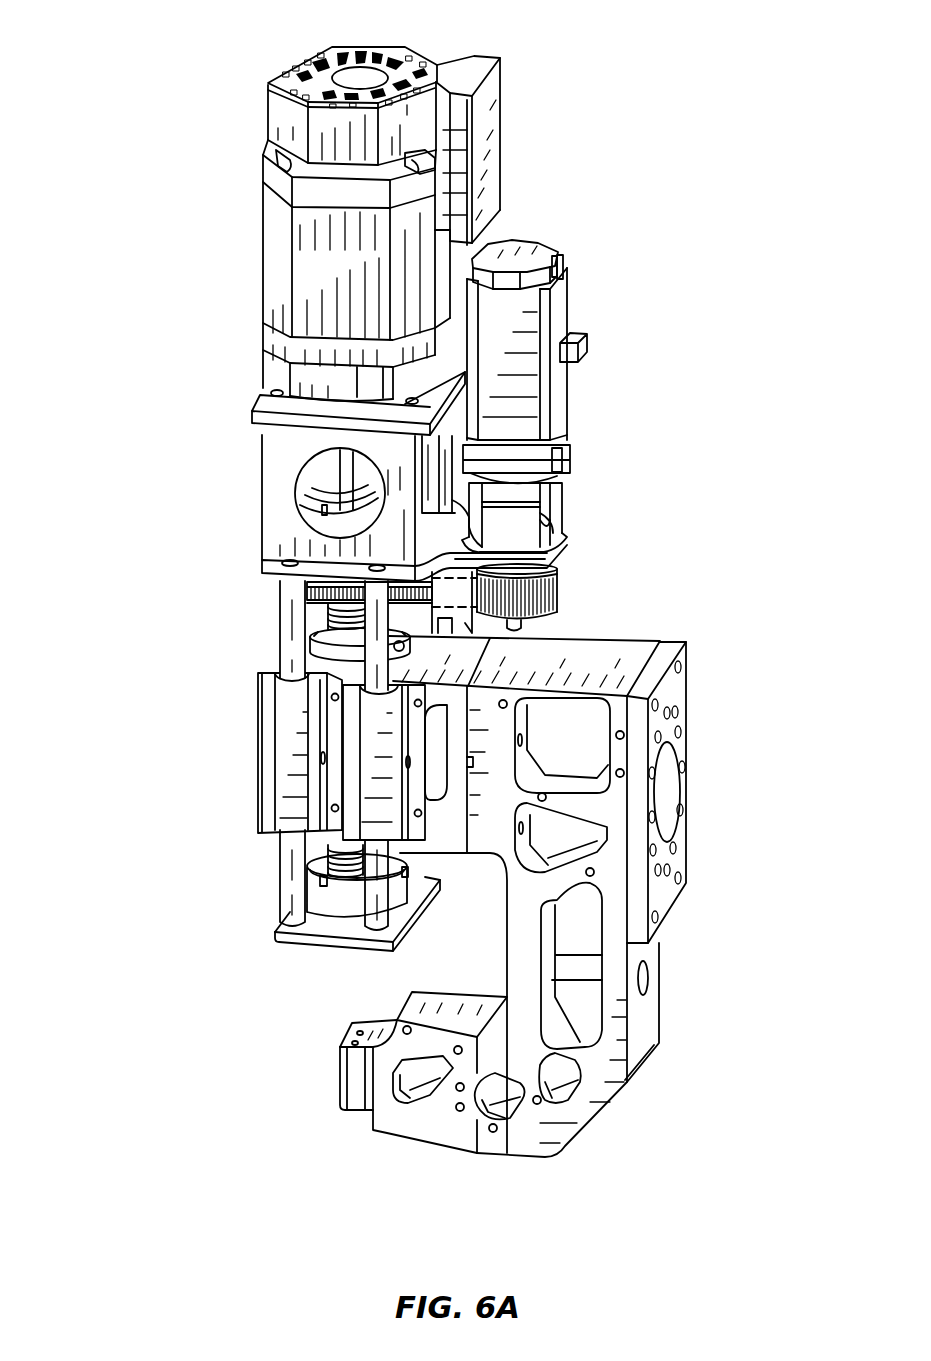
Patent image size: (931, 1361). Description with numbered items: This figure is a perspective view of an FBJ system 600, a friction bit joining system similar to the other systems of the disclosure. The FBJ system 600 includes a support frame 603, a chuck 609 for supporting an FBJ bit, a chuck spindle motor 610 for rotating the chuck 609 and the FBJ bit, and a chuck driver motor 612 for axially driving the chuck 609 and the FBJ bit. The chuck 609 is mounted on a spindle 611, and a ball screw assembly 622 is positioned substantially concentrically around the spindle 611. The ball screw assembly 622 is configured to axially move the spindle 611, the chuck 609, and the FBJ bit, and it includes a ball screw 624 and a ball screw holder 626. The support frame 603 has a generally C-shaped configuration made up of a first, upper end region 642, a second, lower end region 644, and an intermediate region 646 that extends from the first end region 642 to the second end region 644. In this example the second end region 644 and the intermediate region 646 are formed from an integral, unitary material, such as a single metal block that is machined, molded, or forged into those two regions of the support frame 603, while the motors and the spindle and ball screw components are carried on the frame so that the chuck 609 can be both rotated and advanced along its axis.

The FBJ system 600 is at (108, 77).
The chuck spindle motor 610 is at (514, 199).
The chuck driver motor 612 is at (598, 386).
The spindle 611 is at (350, 481).
The first end region 642 is at (580, 622).
The ball screw assembly 622 is at (260, 632).
The ball screw holder 626 is at (322, 664).
The ball screw 624 is at (320, 865).
The chuck 609 is at (263, 954).
The support frame 603 is at (741, 660).
The intermediate region 646 is at (668, 955).
The second end region 644 is at (388, 1143).